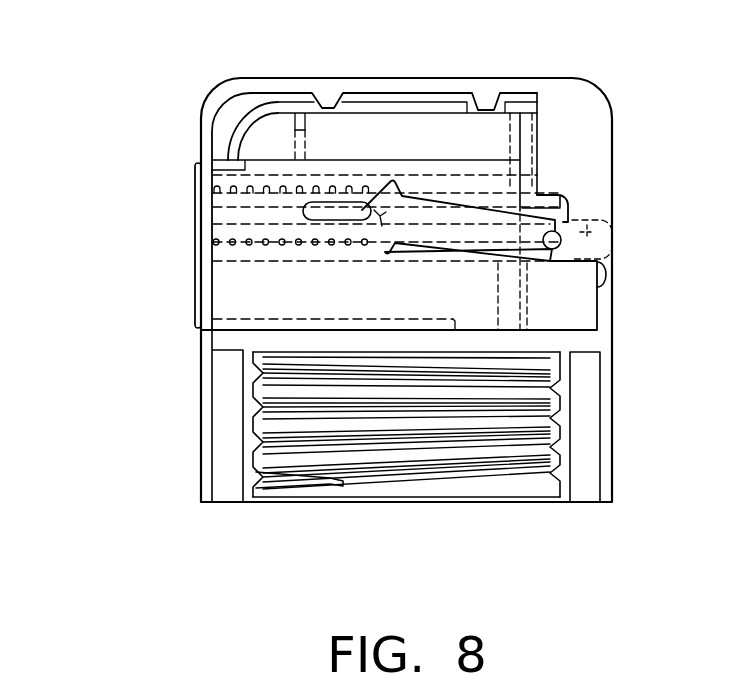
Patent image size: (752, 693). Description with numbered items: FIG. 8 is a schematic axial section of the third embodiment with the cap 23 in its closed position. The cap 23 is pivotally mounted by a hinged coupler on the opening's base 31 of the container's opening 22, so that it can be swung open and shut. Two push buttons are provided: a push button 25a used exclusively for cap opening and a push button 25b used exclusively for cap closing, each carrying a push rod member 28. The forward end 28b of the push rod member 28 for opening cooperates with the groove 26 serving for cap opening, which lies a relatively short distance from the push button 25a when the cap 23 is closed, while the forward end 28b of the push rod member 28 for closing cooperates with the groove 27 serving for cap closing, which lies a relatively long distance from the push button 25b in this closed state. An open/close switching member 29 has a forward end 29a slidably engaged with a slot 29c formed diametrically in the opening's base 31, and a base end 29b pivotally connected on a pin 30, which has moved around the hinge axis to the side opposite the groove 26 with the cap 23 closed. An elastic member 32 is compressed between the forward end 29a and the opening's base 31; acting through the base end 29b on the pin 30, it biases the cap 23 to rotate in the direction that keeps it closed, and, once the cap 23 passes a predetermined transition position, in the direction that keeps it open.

The container's opening 22 is at (413, 135).
The cap 23 is at (582, 110).
The push button exclusively used for cap opening 25a is at (197, 240).
The push button exclusively used for cap closing 25b is at (146, 245).
The groove serving for cap opening 26 is at (569, 210).
The groove serving for cap closing 27 is at (566, 241).
The push rod member 28 is at (257, 193).
The forward end of the push rod member 28b is at (562, 199).
The open/close switching member 29 is at (502, 250).
The forward end of the open/close switching member 29a is at (390, 258).
The base end of the open/close switching member 29b is at (541, 263).
The slot 29c is at (337, 221).
The pin 30 is at (560, 249).
The opening's base 31 is at (588, 396).
The elastic member 32 is at (315, 188).